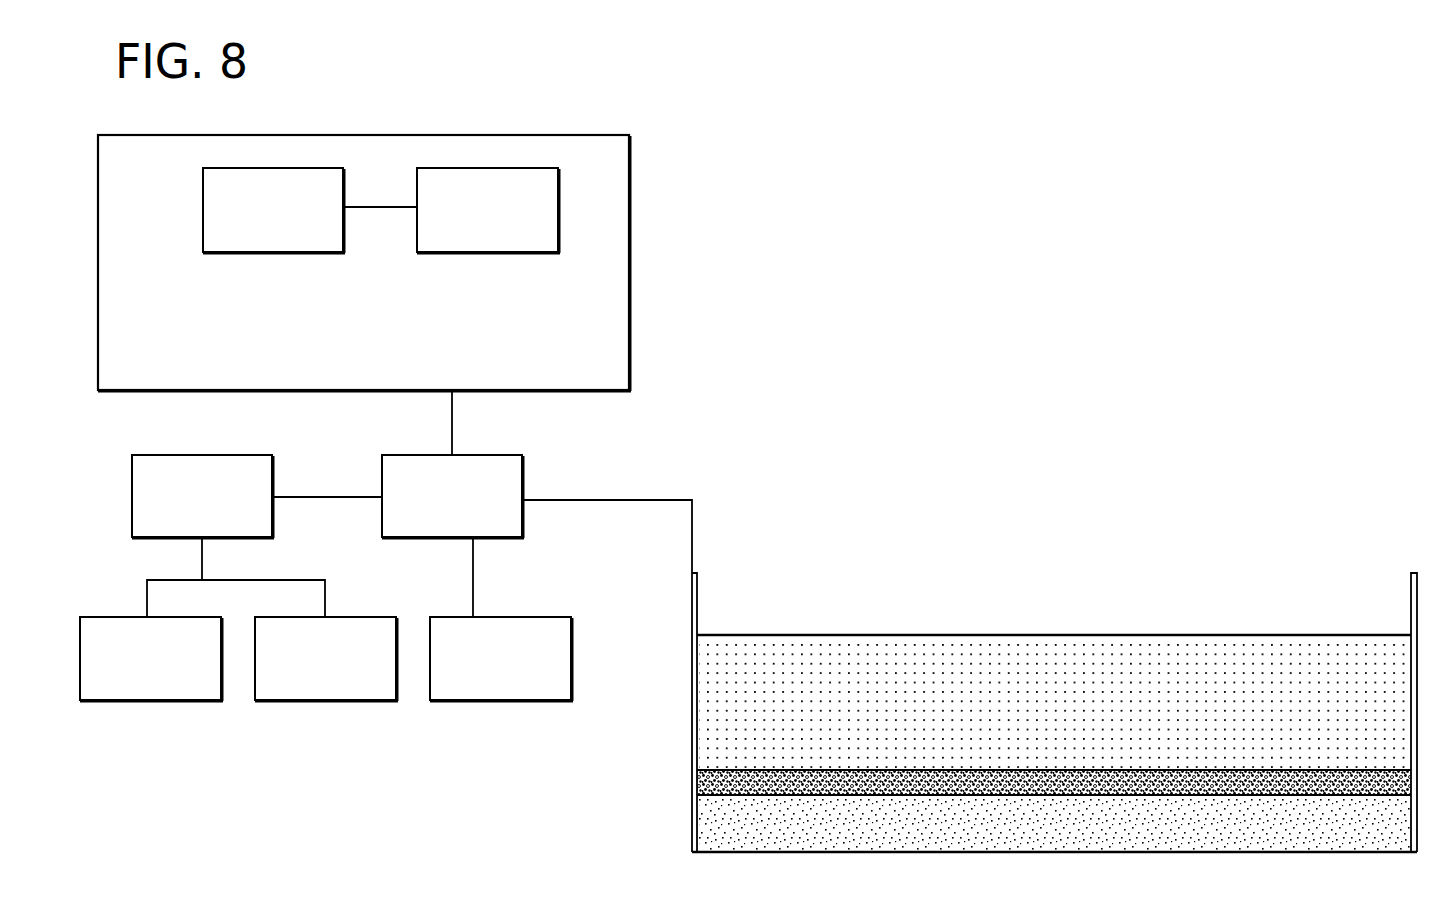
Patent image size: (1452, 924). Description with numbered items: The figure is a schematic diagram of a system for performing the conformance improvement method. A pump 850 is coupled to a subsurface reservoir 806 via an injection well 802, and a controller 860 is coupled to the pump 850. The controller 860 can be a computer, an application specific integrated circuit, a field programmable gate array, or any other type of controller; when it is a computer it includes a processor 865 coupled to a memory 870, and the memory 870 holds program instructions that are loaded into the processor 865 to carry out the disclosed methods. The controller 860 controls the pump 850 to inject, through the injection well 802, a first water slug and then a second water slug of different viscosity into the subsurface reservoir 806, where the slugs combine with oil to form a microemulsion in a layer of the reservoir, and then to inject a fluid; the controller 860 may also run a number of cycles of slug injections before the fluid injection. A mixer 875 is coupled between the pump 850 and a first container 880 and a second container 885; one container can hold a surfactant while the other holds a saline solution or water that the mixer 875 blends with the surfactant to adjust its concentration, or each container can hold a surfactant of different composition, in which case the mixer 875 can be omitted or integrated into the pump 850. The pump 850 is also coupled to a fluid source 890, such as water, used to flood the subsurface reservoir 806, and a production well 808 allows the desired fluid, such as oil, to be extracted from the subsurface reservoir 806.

The injection well 802 is at (698, 593).
The subsurface reservoir 806 is at (1111, 601).
The production well 808 is at (1413, 573).
The pump 850 is at (426, 511).
The controller 860 is at (364, 263).
The processor 865 is at (246, 225).
The memory 870 is at (461, 225).
The mixer 875 is at (176, 511).
The first container 880 is at (124, 673).
The second container 885 is at (299, 673).
The fluid source 890 is at (474, 673).